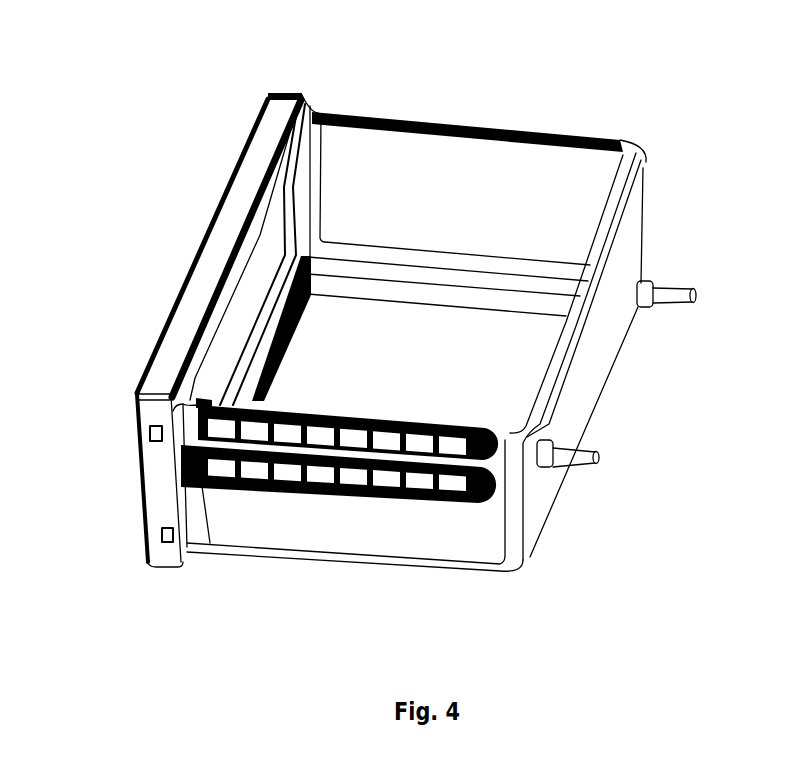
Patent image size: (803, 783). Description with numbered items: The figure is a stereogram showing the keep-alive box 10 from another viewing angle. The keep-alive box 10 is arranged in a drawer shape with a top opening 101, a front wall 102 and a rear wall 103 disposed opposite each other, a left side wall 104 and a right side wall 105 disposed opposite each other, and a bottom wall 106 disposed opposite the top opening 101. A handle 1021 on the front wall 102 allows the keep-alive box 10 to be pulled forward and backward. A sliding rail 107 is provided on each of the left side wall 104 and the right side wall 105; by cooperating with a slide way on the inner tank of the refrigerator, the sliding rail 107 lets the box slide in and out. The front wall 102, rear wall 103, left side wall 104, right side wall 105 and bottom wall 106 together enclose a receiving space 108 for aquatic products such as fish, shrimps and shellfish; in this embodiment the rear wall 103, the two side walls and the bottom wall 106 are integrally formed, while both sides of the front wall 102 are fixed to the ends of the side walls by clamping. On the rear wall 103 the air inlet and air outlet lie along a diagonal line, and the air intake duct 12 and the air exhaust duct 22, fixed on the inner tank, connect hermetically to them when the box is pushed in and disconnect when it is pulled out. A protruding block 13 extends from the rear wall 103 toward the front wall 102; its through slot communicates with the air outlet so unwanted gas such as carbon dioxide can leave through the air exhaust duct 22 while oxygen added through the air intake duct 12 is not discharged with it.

The keep-alive box 10 is at (263, 143).
The top opening 101 is at (359, 120).
The front wall 102 is at (243, 298).
The handle 1021 is at (185, 333).
The rear wall 103 is at (602, 340).
The left side wall 104 is at (405, 177).
The right side wall 105 is at (380, 533).
The bottom wall 106 is at (467, 360).
The sliding rail 107 is at (447, 503).
The receiving space 108 is at (337, 383).
The protruding block 13 is at (447, 258).
The air intake duct 12 is at (572, 460).
The air exhaust duct 22 is at (673, 297).